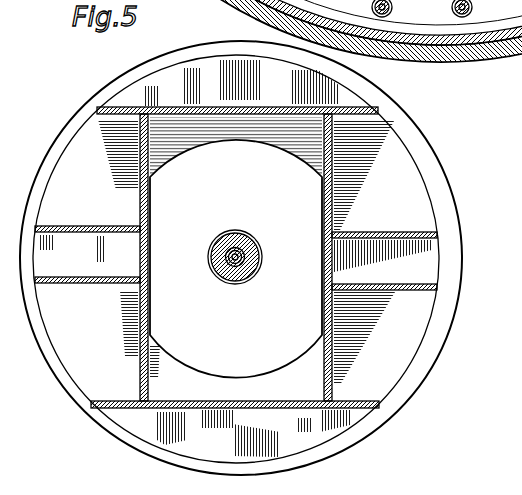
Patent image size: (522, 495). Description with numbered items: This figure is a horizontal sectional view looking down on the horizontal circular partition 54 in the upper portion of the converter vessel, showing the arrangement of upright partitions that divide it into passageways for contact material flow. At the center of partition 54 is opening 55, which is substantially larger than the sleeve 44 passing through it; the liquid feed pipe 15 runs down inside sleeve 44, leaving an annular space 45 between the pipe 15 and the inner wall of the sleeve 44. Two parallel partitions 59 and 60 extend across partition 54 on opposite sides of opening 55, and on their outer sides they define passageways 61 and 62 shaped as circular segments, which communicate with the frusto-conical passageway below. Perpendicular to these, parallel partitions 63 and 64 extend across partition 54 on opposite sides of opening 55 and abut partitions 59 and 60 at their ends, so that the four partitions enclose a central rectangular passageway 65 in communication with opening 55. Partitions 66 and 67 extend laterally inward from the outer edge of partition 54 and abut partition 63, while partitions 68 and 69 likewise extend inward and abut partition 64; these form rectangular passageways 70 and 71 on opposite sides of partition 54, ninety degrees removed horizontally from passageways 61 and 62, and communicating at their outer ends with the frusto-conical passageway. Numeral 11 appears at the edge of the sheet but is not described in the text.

The housing 11 is at (514, 294).
The liquid feed pipe 15 is at (236, 254).
The sleeve 44 is at (250, 278).
The annular space 45 is at (253, 253).
The horizontal circular partition 54 is at (72, 152).
The opening 55 is at (232, 148).
The partition 59 is at (320, 110).
The partition 60 is at (211, 406).
The passageway 61 is at (182, 73).
The passageway 62 is at (323, 434).
The partition 63 is at (137, 363).
The partition 64 is at (333, 167).
The central rectangular passageway 65 is at (157, 118).
The partition 66 is at (105, 213).
The partition 67 is at (63, 283).
The partition 68 is at (404, 223).
The partition 69 is at (377, 292).
The rectangular passageway 70 is at (109, 275).
The rectangular passageway 71 is at (420, 252).